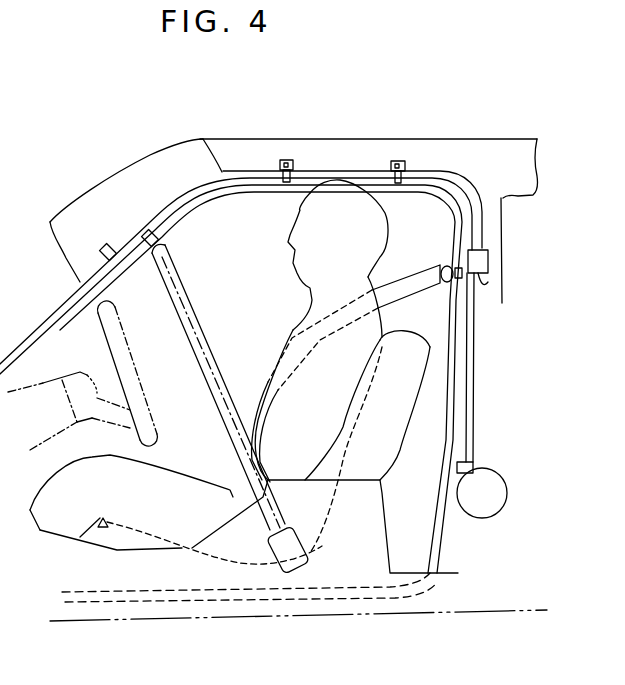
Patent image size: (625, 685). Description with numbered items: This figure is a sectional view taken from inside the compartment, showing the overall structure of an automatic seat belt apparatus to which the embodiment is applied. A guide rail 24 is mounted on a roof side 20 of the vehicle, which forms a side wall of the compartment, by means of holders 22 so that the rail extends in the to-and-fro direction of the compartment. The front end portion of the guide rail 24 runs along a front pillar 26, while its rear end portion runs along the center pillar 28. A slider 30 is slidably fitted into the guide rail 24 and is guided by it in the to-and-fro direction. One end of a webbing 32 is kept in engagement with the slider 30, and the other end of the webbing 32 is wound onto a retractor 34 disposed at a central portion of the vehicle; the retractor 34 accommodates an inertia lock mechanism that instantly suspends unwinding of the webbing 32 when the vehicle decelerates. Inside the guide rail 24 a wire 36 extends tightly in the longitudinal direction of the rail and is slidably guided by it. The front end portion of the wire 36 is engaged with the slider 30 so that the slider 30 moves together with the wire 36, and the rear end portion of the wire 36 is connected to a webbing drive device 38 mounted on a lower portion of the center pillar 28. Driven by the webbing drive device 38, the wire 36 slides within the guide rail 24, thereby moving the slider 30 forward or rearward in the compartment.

The roof side 20 is at (332, 146).
The holders 22 is at (287, 155).
The guide rail 24 is at (203, 138).
The front pillar 26 is at (115, 193).
The center pillar 28 is at (495, 225).
The slider 30 is at (455, 285).
The webbing 32 is at (409, 272).
The retractor 34 is at (307, 555).
The wire 36 is at (468, 382).
The webbing drive device 38 is at (495, 508).